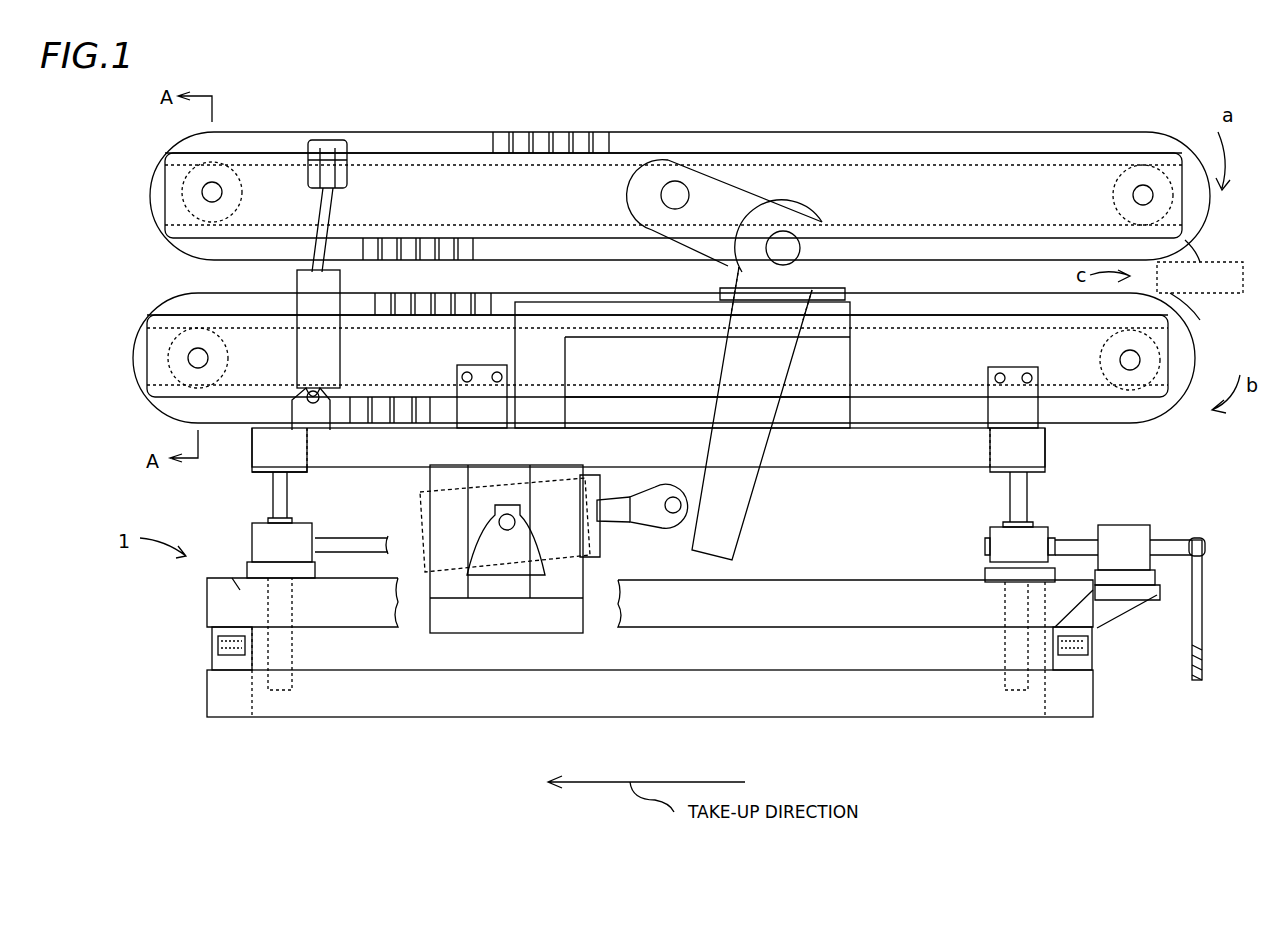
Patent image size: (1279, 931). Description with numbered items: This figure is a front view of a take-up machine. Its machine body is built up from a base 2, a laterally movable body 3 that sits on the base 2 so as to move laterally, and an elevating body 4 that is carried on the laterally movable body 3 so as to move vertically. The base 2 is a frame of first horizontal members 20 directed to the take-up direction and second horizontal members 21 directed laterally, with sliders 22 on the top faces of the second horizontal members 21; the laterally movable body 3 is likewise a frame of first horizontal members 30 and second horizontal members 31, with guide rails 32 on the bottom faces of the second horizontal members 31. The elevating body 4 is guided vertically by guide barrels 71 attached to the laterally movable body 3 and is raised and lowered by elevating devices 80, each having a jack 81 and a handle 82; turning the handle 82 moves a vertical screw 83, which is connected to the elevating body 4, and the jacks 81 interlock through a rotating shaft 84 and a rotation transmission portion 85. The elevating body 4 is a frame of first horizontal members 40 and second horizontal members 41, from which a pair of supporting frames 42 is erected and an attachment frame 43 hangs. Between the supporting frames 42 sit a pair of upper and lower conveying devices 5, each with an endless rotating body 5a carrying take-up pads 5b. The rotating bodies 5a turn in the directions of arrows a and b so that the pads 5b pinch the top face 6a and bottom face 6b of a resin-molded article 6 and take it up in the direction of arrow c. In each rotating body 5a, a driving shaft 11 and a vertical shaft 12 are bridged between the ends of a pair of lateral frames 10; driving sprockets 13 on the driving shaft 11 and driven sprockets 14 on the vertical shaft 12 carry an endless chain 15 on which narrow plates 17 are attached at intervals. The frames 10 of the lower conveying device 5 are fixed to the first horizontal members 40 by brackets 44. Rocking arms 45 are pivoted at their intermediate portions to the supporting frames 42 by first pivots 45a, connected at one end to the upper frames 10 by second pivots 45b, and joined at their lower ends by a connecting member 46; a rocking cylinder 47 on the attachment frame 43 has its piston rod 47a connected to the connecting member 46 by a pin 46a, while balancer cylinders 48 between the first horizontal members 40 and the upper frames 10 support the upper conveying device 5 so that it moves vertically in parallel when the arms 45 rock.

The base 2 is at (220, 700).
The laterally movable body 3 is at (215, 604).
The elevating body 4 is at (250, 452).
The conveying device 5 is at (146, 144).
The endless rotating body 5a is at (838, 162).
The take-up pad 5b is at (546, 136).
The resin-molded article 6 is at (1218, 284).
The top face 6a is at (1208, 260).
The bottom face 6b is at (1198, 308).
The lateral frame 10 is at (938, 190).
The driving shaft 11 is at (214, 188).
The vertical shaft 12 is at (1142, 190).
The driving sprocket 13 is at (182, 192).
The driven sprocket 14 is at (1162, 178).
The endless chain 15 is at (430, 160).
The narrow plate 17 is at (612, 166).
The first horizontal member 20 is at (648, 712).
The second horizontal member 21 is at (236, 716).
The slider 22 is at (214, 652).
The first horizontal member 30 is at (694, 612).
The second horizontal member 31 is at (232, 584).
The guide rail 32 is at (226, 640).
The first horizontal member 40 is at (836, 458).
The second horizontal member 41 is at (310, 448).
The supporting frame 42 is at (630, 328).
The attachment frame 43 is at (490, 625).
The bracket 44 is at (460, 392).
The rocking arm 45 is at (736, 176).
The first pivot 45a is at (800, 246).
The second pivot 45b is at (676, 192).
The connecting member 46 is at (735, 522).
The pin 46a is at (673, 498).
The rocking cylinder 47 is at (472, 506).
The piston rod 47a is at (620, 516).
The balancer cylinder 48 is at (308, 306).
The guide barrel 71 is at (294, 652).
The elevating device 80 is at (256, 530).
The jack 81 is at (300, 542).
The handle 82 is at (1205, 650).
The vertical screw 83 is at (288, 494).
The rotating shaft 84 is at (352, 540).
The rotation transmission portion 85 is at (1136, 538).